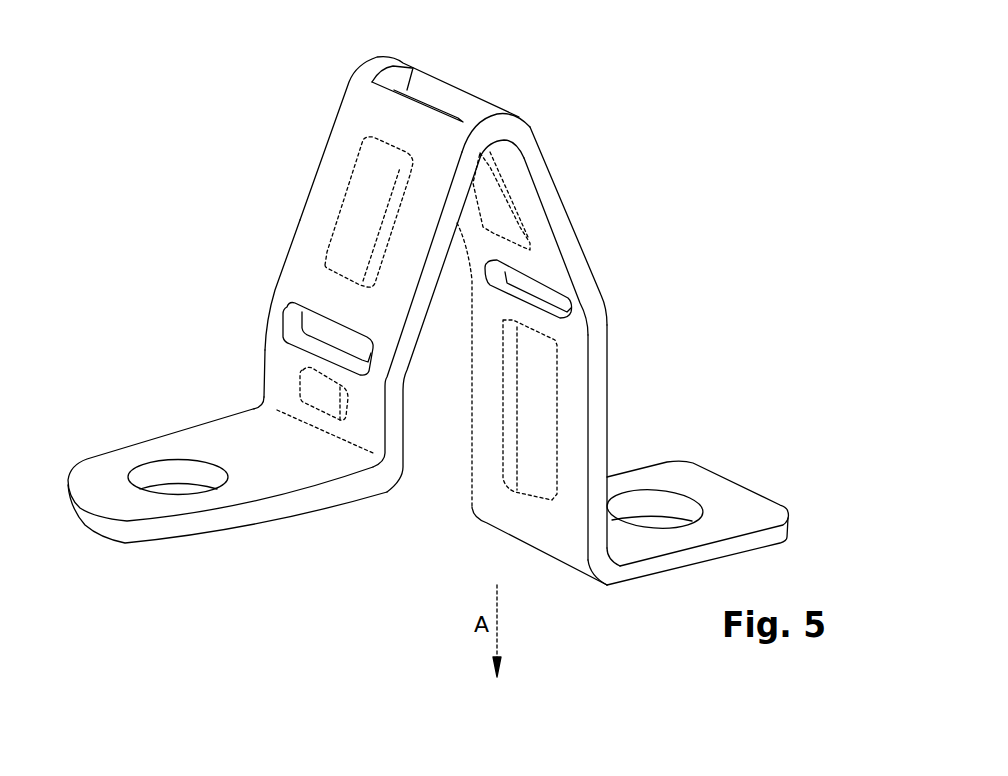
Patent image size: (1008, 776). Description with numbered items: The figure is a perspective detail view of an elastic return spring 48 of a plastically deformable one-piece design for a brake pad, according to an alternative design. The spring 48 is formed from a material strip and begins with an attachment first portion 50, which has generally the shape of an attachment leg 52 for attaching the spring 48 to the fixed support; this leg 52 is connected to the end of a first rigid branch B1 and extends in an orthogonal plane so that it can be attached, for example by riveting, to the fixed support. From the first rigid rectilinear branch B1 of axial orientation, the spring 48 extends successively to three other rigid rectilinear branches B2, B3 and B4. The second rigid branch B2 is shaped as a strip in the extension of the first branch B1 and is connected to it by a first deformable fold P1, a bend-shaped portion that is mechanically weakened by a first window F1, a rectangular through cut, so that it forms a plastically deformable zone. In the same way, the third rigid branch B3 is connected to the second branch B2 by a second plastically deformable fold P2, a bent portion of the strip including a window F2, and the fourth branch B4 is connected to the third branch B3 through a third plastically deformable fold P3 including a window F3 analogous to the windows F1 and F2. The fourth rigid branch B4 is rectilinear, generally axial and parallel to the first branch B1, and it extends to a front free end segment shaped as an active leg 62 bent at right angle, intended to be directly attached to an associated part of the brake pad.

The elastic return spring 48 is at (360, 98).
The attachment first portion 50 is at (246, 450).
The attachment leg 52 is at (102, 493).
The active leg 62 is at (730, 500).
The first deformable fold P1 is at (273, 317).
The second plastically deformable fold P2 is at (505, 129).
The third plastically deformable fold P3 is at (600, 308).
The first rigid branch B1 is at (293, 360).
The second rigid branch B2 is at (343, 300).
The third rigid branch B3 is at (533, 263).
The fourth rigid branch B4 is at (570, 427).
The first window F1 is at (338, 358).
The window F2 is at (453, 100).
The window F3 is at (537, 297).